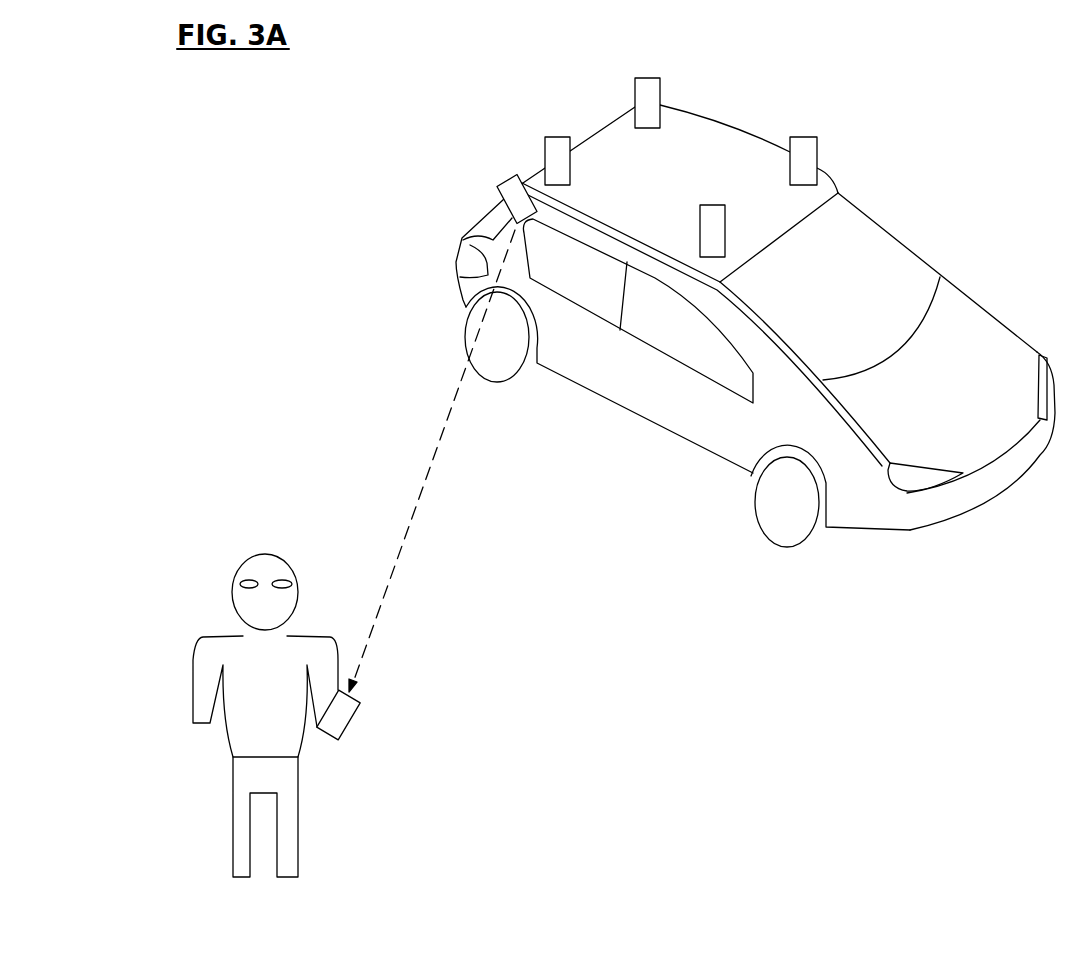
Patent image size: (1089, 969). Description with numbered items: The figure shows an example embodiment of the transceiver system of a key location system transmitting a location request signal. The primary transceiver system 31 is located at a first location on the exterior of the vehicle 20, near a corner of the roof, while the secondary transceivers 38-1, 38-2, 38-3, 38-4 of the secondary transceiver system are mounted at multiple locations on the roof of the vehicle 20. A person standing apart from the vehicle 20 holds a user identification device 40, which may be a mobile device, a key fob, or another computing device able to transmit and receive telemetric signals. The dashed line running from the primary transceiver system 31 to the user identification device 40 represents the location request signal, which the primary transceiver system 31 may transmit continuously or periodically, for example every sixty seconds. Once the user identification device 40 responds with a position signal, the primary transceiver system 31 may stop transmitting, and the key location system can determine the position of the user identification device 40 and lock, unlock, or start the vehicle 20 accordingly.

The vehicle 20 is at (910, 530).
The primary transceiver system 31 is at (505, 178).
The secondary transceiver 38-1 is at (557, 137).
The secondary transceiver 38-2 is at (648, 78).
The secondary transceiver 38-3 is at (803, 137).
The secondary transceiver 38-4 is at (715, 205).
The user identification device 40 is at (347, 730).